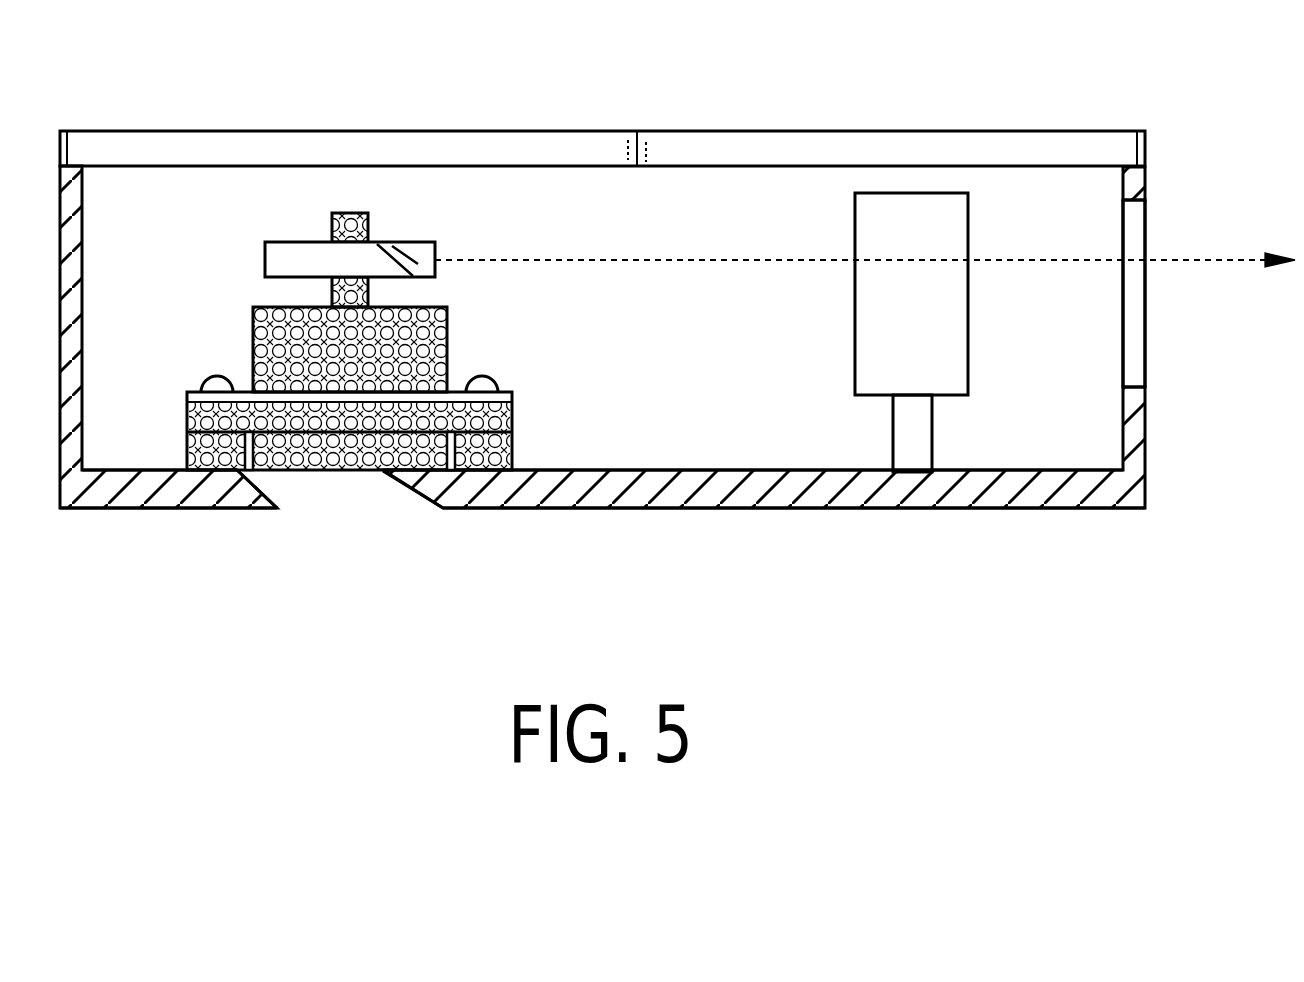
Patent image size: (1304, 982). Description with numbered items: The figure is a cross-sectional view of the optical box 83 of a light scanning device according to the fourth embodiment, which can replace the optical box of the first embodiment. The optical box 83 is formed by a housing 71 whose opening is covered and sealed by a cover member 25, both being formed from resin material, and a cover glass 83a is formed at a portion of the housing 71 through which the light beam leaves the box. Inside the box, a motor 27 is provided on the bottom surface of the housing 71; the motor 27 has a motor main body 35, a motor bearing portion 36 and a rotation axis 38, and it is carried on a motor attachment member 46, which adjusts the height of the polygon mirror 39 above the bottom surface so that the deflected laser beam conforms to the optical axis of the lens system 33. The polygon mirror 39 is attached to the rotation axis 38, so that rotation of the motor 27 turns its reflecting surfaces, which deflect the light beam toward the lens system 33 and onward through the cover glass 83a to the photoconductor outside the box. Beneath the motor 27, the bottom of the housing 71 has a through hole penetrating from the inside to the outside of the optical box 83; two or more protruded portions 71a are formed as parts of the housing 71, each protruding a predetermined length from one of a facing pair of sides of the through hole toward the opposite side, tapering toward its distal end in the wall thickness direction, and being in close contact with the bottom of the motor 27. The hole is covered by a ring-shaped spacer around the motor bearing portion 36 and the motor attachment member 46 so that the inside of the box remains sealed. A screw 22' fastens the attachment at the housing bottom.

The cover member 25 is at (667, 147).
The motor 27 is at (359, 285).
The light emitting element 22' is at (380, 360).
The lens system 33 is at (953, 330).
The motor main body 35 is at (253, 318).
The motor bearing portion 36 is at (333, 452).
The rotation axis 38 is at (332, 230).
The polygon mirror 39 is at (385, 246).
The motor attachment member 46 is at (512, 414).
The housing 71 is at (1013, 510).
The protruded portions 71a is at (412, 488).
The optical box 83 is at (1186, 184).
The cover glass 83a is at (1145, 345).